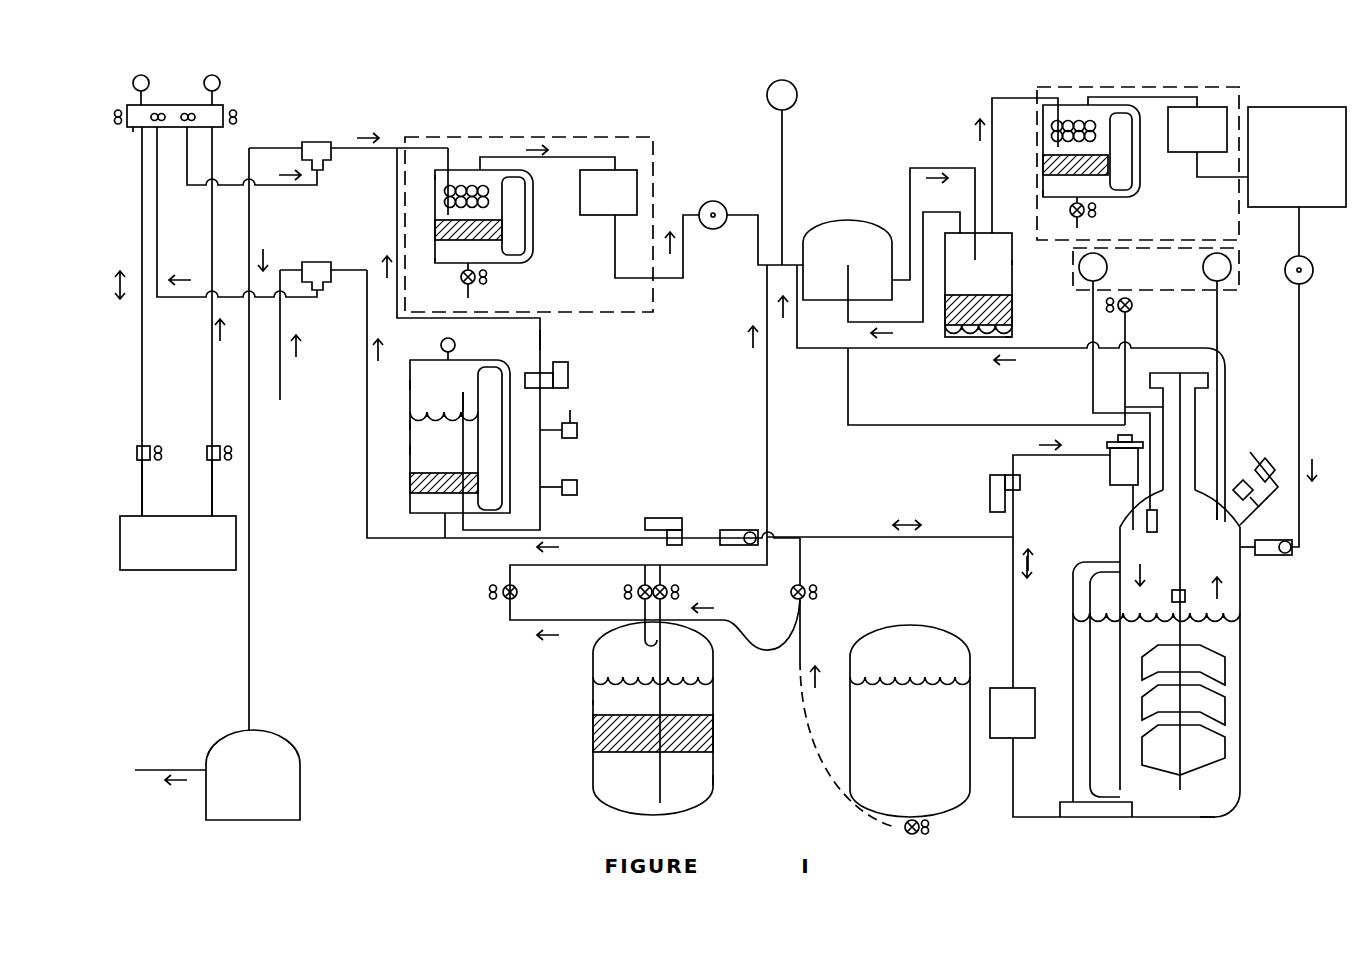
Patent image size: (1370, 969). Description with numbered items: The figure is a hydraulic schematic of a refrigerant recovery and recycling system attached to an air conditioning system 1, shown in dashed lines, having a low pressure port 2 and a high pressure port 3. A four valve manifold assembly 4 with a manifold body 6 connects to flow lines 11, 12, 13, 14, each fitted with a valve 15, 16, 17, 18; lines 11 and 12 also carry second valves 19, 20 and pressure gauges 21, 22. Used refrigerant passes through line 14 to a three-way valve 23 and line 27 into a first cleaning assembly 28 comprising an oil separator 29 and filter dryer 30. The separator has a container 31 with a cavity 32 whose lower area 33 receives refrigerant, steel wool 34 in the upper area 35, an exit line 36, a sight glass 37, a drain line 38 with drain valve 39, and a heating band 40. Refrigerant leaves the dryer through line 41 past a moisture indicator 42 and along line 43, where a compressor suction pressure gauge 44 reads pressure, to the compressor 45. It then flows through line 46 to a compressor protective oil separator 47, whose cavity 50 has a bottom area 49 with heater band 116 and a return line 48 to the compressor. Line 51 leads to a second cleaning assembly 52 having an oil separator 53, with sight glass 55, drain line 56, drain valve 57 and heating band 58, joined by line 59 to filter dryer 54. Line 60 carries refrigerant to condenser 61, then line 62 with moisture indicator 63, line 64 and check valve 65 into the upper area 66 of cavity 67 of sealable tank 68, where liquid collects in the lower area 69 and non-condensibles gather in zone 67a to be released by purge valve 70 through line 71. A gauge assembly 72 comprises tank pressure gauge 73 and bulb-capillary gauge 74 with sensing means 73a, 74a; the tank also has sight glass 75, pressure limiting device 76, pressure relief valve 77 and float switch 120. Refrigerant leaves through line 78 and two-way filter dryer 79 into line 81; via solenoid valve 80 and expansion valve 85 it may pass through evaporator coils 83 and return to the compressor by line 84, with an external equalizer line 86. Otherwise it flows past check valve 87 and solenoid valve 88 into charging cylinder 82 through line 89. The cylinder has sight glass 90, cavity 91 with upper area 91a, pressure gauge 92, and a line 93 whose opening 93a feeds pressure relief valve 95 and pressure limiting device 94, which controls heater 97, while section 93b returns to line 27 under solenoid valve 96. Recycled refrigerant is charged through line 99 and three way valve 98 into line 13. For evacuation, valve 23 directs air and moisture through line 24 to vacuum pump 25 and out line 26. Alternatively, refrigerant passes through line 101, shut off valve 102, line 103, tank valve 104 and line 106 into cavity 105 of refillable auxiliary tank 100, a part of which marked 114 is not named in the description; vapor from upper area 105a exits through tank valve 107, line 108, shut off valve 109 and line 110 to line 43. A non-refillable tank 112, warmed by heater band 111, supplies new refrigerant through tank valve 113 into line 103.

The air conditioning system 1 is at (185, 572).
The low pressure port 2 is at (138, 512).
The high pressure port 3 is at (210, 512).
The four valve manifold assembly 4 is at (128, 108).
The manifold body 6 is at (135, 130).
The refrigerant flow line 11 is at (138, 335).
The refrigerant flow line 12 is at (208, 335).
The refrigerant flow line 13 is at (300, 300).
The refrigerant flow line 14 is at (300, 190).
The valve 15 is at (115, 124).
The valve 16 is at (238, 117).
The valve 17 is at (160, 110).
The valve 18 is at (190, 110).
The second valve 19 is at (150, 445).
The second valve 20 is at (228, 445).
The pressure gauge 21 is at (134, 77).
The pressure gauge 22 is at (219, 77).
The three-way valve 23 is at (313, 140).
The line 24 is at (252, 668).
The vacuum pump 25 is at (300, 764).
The line 26 is at (188, 768).
The line 27 is at (372, 150).
The first cleaning assembly 28 is at (570, 135).
The oil separator 29 is at (450, 168).
The filter dryer 30 is at (637, 185).
The hollow container 31 is at (440, 172).
The cavity 32 is at (484, 216).
The lower area 33 is at (445, 265).
The steel wool 34 is at (470, 185).
The upper area 35 is at (490, 175).
The line 36 is at (580, 155).
The sight glass 37 is at (527, 210).
The line 38 is at (477, 270).
The drain valve 39 is at (487, 283).
The heating band 40 is at (436, 228).
The line 41 is at (683, 272).
The moisture indicator 42 is at (710, 201).
The line 43 is at (758, 247).
The compressor suction pressure gauge 44 is at (767, 82).
The compressor 45 is at (855, 220).
The line 46 is at (950, 165).
The compressor protective oil separator 47 is at (1013, 258).
The return line 48 is at (848, 318).
The bottom area 49 is at (1012, 332).
The cavity 50 is at (978, 285).
The line 51 is at (988, 97).
The second cleaning assembly 52 is at (1128, 88).
The oil separator 53 is at (1050, 122).
The filter dryer 54 is at (1227, 110).
The sight glass 55 is at (1140, 182).
The drain line 56 is at (1075, 200).
The drain valve 57 is at (1097, 211).
The heating band 58 is at (1050, 165).
The line 59 is at (1200, 95).
The line 60 is at (1222, 180).
The condenser 61 is at (1335, 106).
The line 62 is at (1302, 240).
The moisture indicator 63 is at (1311, 278).
The line 64 is at (1300, 422).
The check valve 65 is at (1283, 563).
The upper area 66 is at (1242, 598).
The cavity 67 is at (1201, 581).
The less turbulent zone 67a is at (1185, 380).
The sealable tank 68 is at (1242, 670).
The lower area 69 is at (1228, 805).
The purge valve 70 is at (1133, 307).
The line 71 is at (1128, 335).
The gauge assembly 72 is at (1240, 260).
The tank pressure gauge 73 is at (1228, 281).
The sensing means 73a is at (1217, 510).
The tank bulb-capillary gauge 74 is at (1082, 278).
The sensing means 74a is at (1157, 525).
The sight glass 75 is at (1073, 637).
The pressure limiting device 76 is at (1235, 485).
The pressure relief valve 77 is at (1278, 468).
The line 78 is at (1013, 772).
The two-way filter dryer 79 is at (1012, 688).
The solenoid valve 80 is at (1020, 485).
The line 81 is at (1012, 582).
The charging cylinder 82 is at (410, 412).
The evaporator coils 83 is at (1220, 655).
The line 84 is at (965, 350).
The expansion valve 85 is at (1110, 468).
The external equalizer line 86 is at (850, 393).
The check valve 87 is at (745, 528).
The solenoid valve 88 is at (675, 516).
The line 89 is at (443, 525).
The sight glass 90 is at (518, 370).
The cavity 91 is at (429, 450).
The upper area 91a is at (435, 375).
The pressure gauge 92 is at (440, 340).
The line 93 is at (542, 518).
The end 93a is at (444, 405).
The section 93b is at (541, 345).
The pressure limiting device 94 is at (572, 492).
The pressure relief valve 95 is at (572, 440).
The solenoid valve 96 is at (570, 370).
The heater 97 is at (412, 483).
The three way valve 98 is at (315, 260).
The line 99 is at (366, 426).
The refillable auxiliary tank 100 is at (592, 670).
The line 101 is at (803, 560).
The shut off valve 102 is at (818, 594).
The line 103 is at (778, 645).
The tank valve 104 is at (682, 592).
The cavity 105 is at (619, 697).
The upper area 105a is at (653, 665).
The line 106 is at (658, 773).
The second tank valve 107 is at (622, 594).
The line 108 is at (655, 643).
The shut off valve 109 is at (495, 600).
The line 110 is at (765, 445).
The heater band 111 is at (600, 732).
The non-refillable auxiliary tank 112 is at (920, 628).
The tank valve 113 is at (930, 825).
The tank wall 114 is at (715, 775).
The heater band 116 is at (1012, 310).
The float switch 120 is at (1175, 588).